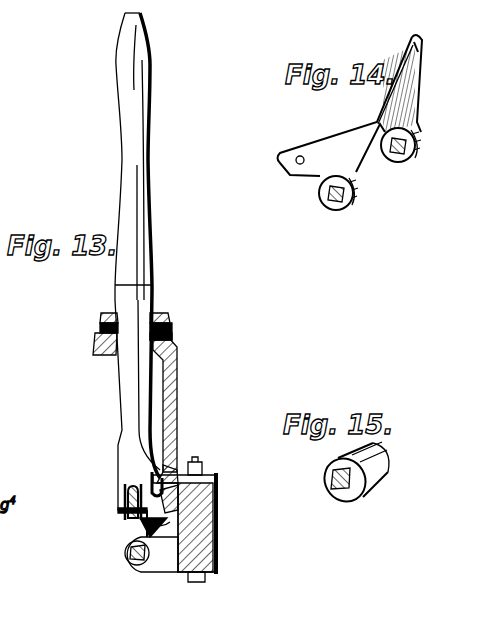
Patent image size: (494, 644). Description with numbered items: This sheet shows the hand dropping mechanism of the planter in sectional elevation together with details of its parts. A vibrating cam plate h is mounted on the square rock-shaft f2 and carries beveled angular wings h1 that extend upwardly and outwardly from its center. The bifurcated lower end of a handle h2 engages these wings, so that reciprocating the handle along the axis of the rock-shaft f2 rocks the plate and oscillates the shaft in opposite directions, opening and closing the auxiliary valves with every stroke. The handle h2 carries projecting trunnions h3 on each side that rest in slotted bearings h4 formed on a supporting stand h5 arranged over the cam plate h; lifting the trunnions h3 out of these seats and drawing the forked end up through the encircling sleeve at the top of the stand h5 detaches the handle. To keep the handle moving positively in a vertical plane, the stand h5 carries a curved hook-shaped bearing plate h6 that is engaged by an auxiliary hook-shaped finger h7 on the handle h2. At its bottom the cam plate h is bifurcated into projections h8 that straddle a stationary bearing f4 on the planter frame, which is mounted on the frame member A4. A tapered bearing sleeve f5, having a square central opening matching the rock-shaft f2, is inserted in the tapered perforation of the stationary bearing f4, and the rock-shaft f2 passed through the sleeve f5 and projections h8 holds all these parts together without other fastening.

In FIG. 13, the vibrating cam plate h is at (130, 516).
In FIG. 14, the vibrating cam plate h is at (350, 105).
In FIG. 13, the beveled angular wings h1 is at (150, 512).
In FIG. 14, the beveled angular wings h1 is at (408, 84).
In FIG. 13, the handle h2 is at (138, 245).
In FIG. 13, the trunnions h3 is at (100, 318).
In FIG. 13, the slotted bearings h4 is at (95, 338).
In FIG. 13, the supporting stand h5 is at (177, 385).
In FIG. 13, the curved hook-shaped bearing plate h6 is at (153, 485).
In FIG. 13, the auxiliary hook-shaped finger h7 is at (162, 477).
In FIG. 13, the projections h8 is at (128, 537).
In FIG. 14, the projections h8 is at (358, 191).
In FIG. 13, the frame block A4 is at (200, 533).
In FIG. 13, the rock-shaft f2 is at (128, 562).
In FIG. 13, the stationary bearings f4 is at (162, 565).
In FIG. 13, the bearing sleeves f5 is at (130, 565).
In FIG. 15, the bearing sleeves f5 is at (380, 478).